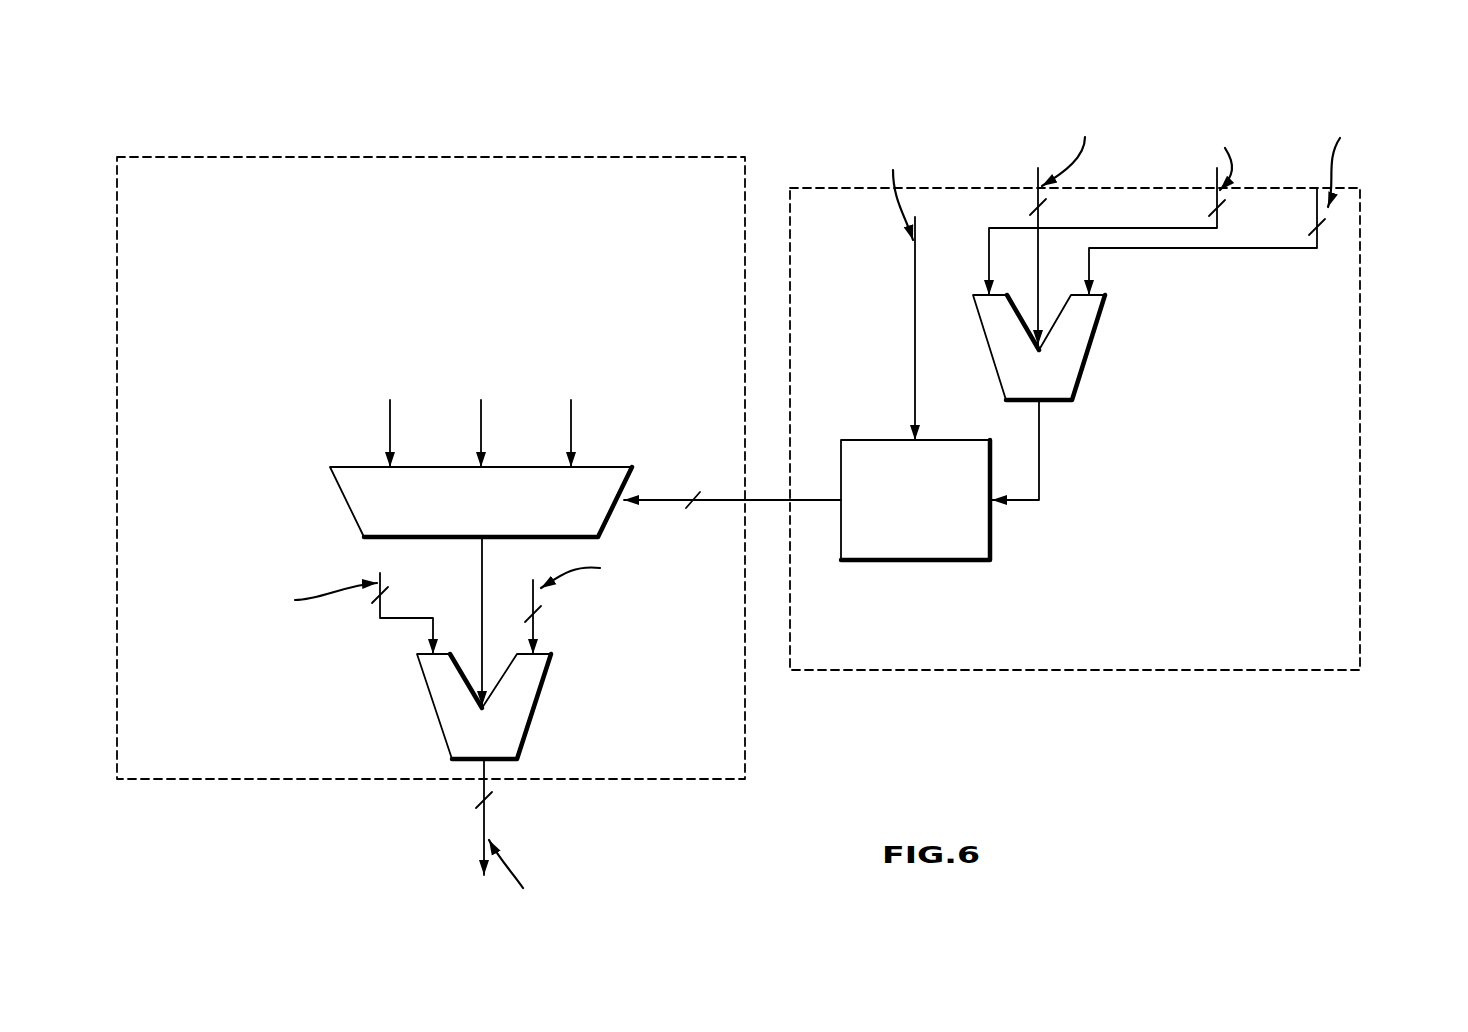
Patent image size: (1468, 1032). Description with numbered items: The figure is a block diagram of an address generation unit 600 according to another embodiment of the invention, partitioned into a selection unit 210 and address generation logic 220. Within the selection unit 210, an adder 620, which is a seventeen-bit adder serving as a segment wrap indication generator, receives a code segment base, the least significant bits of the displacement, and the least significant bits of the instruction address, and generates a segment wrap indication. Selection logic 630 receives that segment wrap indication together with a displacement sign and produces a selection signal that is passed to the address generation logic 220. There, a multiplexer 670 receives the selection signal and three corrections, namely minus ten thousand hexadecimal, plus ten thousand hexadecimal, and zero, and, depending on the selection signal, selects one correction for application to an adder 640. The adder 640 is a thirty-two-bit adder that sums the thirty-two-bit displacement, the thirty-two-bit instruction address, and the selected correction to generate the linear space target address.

The address generation unit 600 is at (716, 140).
The address generation logic 220 is at (618, 785).
The adder 640 is at (613, 462).
The multiplexer 670 is at (537, 722).
The selection unit 210 is at (1095, 672).
The adder (segment wrap indication generator) 620 is at (1092, 356).
The selection logic 630 is at (919, 565).